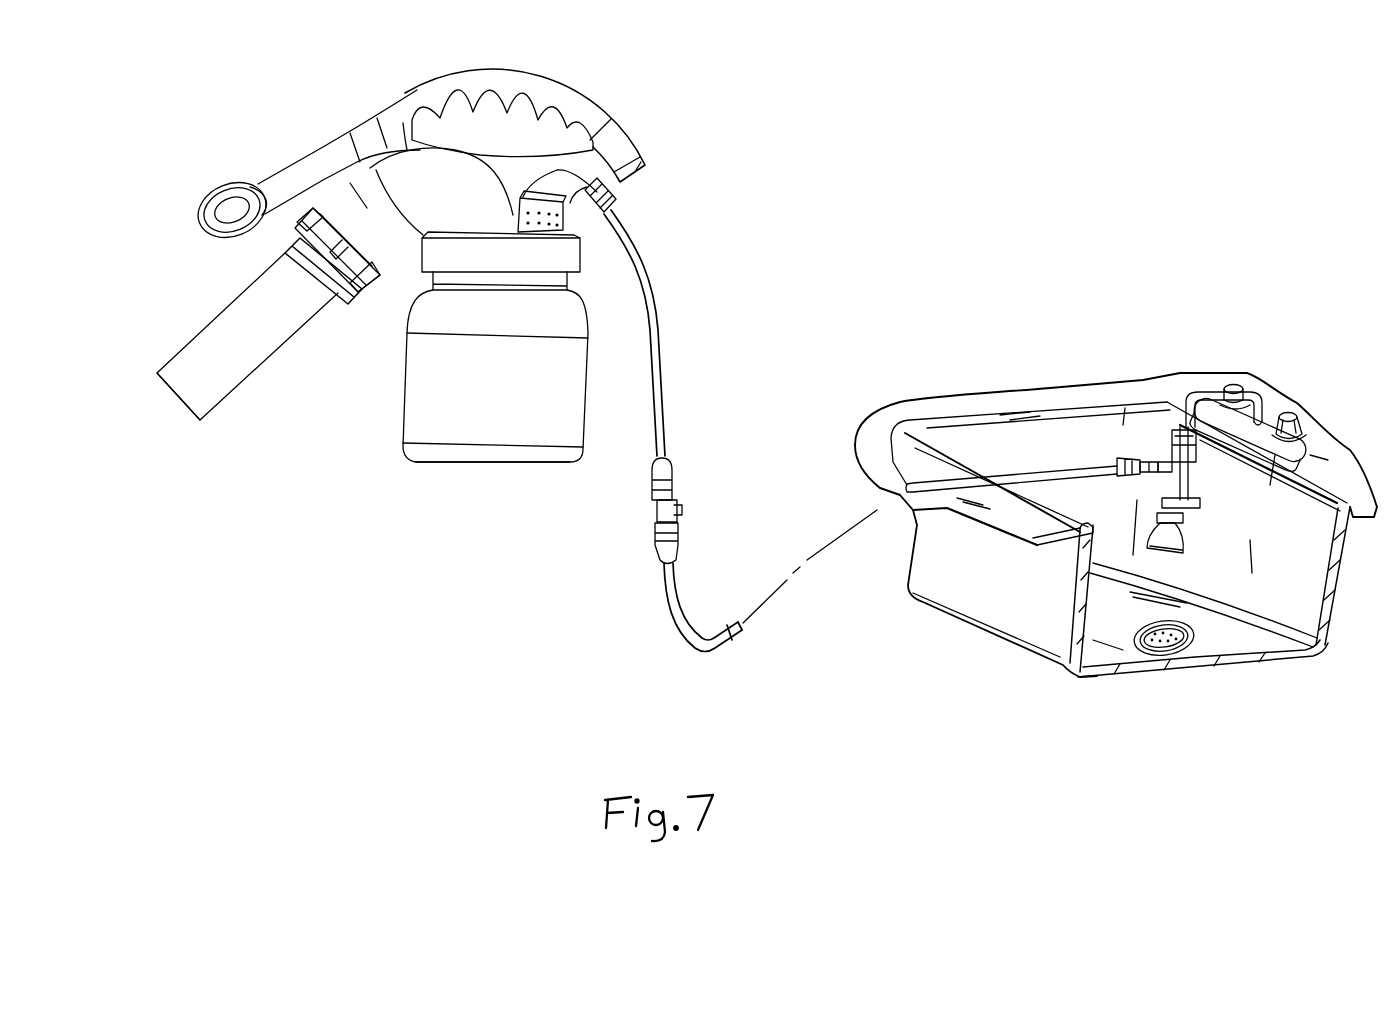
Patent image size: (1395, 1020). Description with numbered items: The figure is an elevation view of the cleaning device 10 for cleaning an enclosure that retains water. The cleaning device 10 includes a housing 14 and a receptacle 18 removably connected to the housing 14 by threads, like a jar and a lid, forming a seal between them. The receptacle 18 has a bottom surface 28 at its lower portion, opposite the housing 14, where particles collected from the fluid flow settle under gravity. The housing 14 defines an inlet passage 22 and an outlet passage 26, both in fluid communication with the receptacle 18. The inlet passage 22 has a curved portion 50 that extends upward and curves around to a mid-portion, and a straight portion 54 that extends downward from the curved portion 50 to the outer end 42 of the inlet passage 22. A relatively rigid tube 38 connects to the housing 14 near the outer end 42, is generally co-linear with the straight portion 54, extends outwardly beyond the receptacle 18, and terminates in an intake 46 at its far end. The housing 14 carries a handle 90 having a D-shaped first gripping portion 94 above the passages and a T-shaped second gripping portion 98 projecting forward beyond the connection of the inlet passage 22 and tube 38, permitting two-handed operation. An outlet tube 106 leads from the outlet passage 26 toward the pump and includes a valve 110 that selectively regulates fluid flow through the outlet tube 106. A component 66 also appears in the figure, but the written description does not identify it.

The cleaning device 10 is at (160, 105).
The housing 14 is at (586, 258).
The receptacle 18 is at (586, 382).
The inlet passage 22 is at (403, 150).
The outlet passage 26 is at (553, 167).
The bottom surface 28 is at (476, 462).
The tube 38 is at (205, 325).
The outer end 42 is at (340, 207).
The intake 46 is at (185, 412).
The curved portion 50 is at (467, 160).
The straight portion 54 is at (333, 207).
The collar 66 is at (355, 297).
The handle 90 is at (380, 102).
The first gripping portion 94 is at (510, 70).
The second gripping portion 98 is at (195, 208).
The outlet tube 106 is at (657, 333).
The valve 110 is at (676, 487).